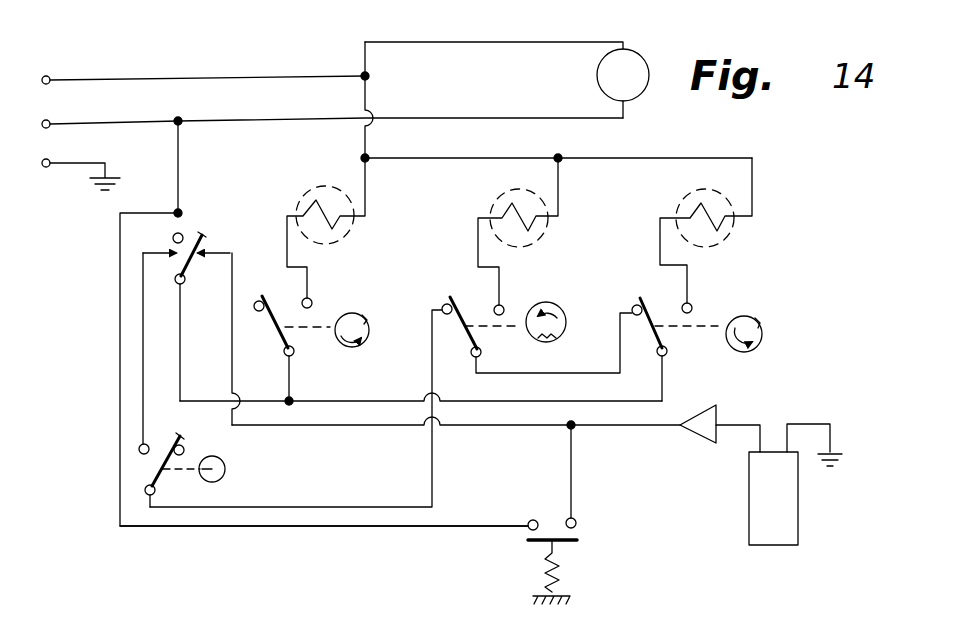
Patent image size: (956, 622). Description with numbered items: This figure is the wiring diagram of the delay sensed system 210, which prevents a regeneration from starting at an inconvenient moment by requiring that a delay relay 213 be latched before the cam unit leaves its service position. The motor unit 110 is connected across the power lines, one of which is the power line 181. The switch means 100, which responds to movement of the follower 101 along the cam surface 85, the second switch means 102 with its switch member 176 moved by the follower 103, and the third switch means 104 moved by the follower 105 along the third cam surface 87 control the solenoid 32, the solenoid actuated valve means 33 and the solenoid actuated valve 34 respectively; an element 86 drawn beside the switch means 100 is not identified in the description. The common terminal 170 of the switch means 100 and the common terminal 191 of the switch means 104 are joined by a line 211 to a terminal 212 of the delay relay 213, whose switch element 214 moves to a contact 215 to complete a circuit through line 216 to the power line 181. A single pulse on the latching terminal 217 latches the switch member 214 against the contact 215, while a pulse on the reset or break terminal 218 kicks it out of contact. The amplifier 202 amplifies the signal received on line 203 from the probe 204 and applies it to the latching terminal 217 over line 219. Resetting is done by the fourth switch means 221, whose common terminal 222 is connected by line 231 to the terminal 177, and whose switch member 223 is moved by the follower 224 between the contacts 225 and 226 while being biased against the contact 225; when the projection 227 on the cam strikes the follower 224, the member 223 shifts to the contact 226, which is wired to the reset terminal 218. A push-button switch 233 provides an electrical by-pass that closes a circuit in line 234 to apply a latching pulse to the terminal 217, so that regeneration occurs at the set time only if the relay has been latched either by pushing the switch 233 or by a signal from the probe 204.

The motor unit 110 is at (633, 55).
The power line 181 is at (270, 100).
The line 216 is at (180, 160).
The contact 215 is at (173, 239).
The delay relay 213 is at (203, 224).
The switch element 214 is at (207, 242).
The latching terminal 217 is at (230, 253).
The reset terminal 218 is at (148, 253).
The terminal 212 is at (183, 284).
The line 211 is at (189, 346).
The contact 225 is at (230, 412).
The contact 226 is at (139, 450).
The switch member 223 is at (160, 475).
The common terminal 222 is at (145, 492).
The fourth switch means 221 is at (168, 476).
The follower 224 is at (184, 464).
The projection 227 is at (206, 481).
The solenoid 32 is at (325, 192).
The solenoid actuated valve means 33 is at (505, 206).
The solenoid actuated valve 34 is at (688, 208).
The follower 101 is at (318, 322).
The switch means 102 is at (470, 303).
The follower 103 is at (510, 320).
The third switch means 104 is at (652, 292).
The follower 105 is at (702, 323).
The common terminal 170 is at (286, 355).
The terminal 177 is at (444, 306).
The switch member 176 is at (482, 354).
The common terminal 191 is at (667, 357).
The switch means 100 is at (310, 342).
The rotary actuator 86 is at (370, 340).
The cam surface 85 is at (561, 310).
The third cam surface 87 is at (757, 348).
The delay sensed system 210 is at (750, 253).
The line 219 is at (485, 431).
The line 231 is at (432, 466).
The line 234 is at (449, 535).
The push-button switch 233 is at (568, 572).
The amplifier 202 is at (691, 461).
The line 203 is at (755, 421).
The probe 204 is at (790, 513).